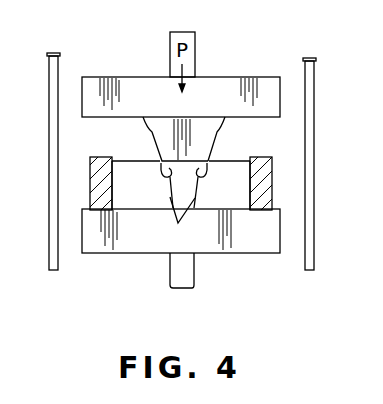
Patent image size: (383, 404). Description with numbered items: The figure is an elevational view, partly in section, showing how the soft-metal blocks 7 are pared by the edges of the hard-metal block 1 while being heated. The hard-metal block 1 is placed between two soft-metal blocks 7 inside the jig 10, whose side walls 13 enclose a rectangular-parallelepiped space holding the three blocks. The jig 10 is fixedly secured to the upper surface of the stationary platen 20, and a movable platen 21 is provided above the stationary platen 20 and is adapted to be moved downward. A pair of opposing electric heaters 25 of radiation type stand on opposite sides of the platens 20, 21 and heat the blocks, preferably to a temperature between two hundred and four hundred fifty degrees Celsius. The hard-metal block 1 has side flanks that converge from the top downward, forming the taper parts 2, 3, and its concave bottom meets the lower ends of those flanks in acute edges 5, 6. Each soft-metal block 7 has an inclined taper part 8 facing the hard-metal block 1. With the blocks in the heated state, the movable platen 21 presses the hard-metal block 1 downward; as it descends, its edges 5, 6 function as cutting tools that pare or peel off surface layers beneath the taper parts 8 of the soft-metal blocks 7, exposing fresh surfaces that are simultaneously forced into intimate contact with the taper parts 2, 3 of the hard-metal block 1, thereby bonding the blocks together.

The hard-metal block 1 is at (197, 122).
The taper part 2 is at (206, 163).
The taper part 3 is at (145, 117).
The acute edge 5 is at (160, 167).
The acute edge 6 is at (208, 165).
The soft-metal block 7 is at (140, 205).
The taper part 8 is at (182, 222).
The jig 10 is at (99, 156).
The side wall 13 is at (90, 172).
The stationary platen 20 is at (219, 245).
The movable platen 21 is at (102, 78).
The electric heater 25 is at (53, 272).